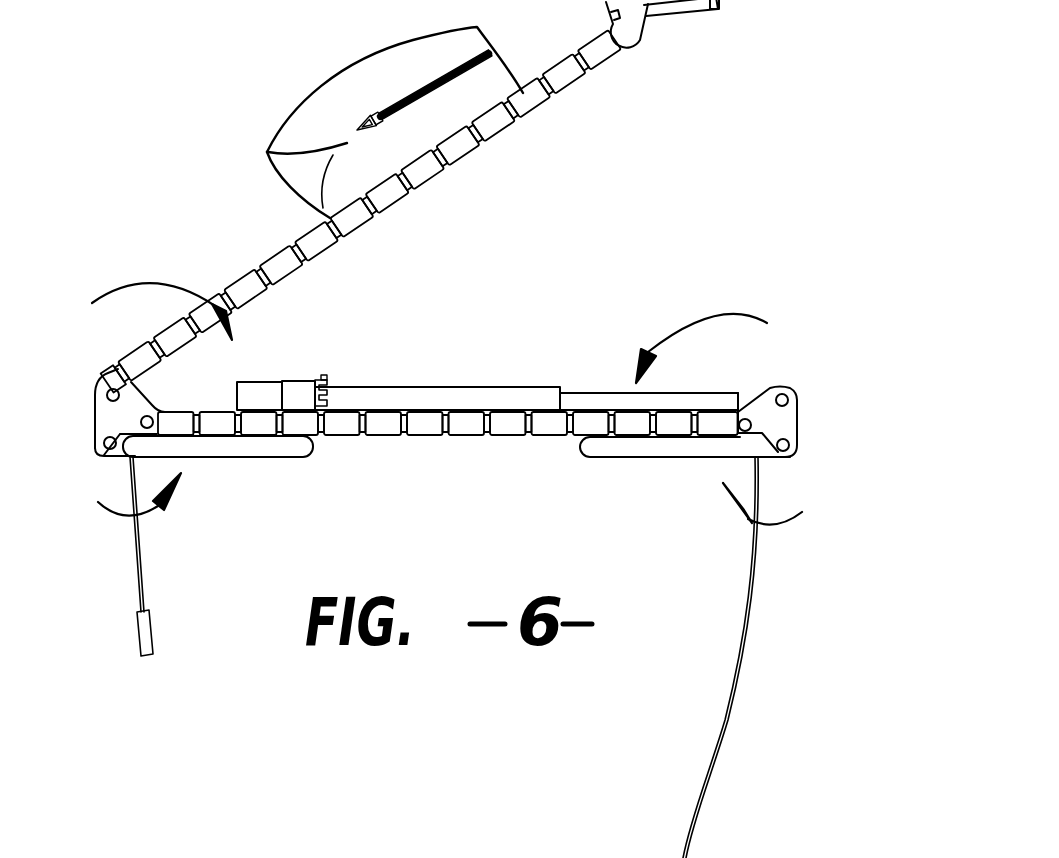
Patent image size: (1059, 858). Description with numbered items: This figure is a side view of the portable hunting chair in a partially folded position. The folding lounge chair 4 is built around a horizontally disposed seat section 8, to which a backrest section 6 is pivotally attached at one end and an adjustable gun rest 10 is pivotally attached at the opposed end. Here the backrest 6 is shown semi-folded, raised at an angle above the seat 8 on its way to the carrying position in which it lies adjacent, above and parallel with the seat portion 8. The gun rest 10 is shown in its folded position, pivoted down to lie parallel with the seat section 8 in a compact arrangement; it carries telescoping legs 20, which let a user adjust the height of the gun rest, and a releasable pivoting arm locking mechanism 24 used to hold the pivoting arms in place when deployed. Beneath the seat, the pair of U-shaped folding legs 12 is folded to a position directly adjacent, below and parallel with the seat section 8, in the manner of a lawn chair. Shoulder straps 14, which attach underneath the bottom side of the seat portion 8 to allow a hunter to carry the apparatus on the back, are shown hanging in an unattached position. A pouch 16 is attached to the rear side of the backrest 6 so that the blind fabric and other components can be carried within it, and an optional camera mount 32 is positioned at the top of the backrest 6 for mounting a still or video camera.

The folding lounge chair 4 is at (190, 132).
The backrest section 6 is at (460, 147).
The seat section 8 is at (385, 437).
The adjustable gun rest 10 is at (260, 393).
The U-shaped folding legs 12 is at (242, 455).
The shoulder straps 14 is at (138, 630).
The pouch 16 is at (352, 65).
The telescoping legs 20 is at (430, 390).
The releasable pivoting arm locking mechanism 24 is at (298, 393).
The camera mount 32 is at (675, 13).